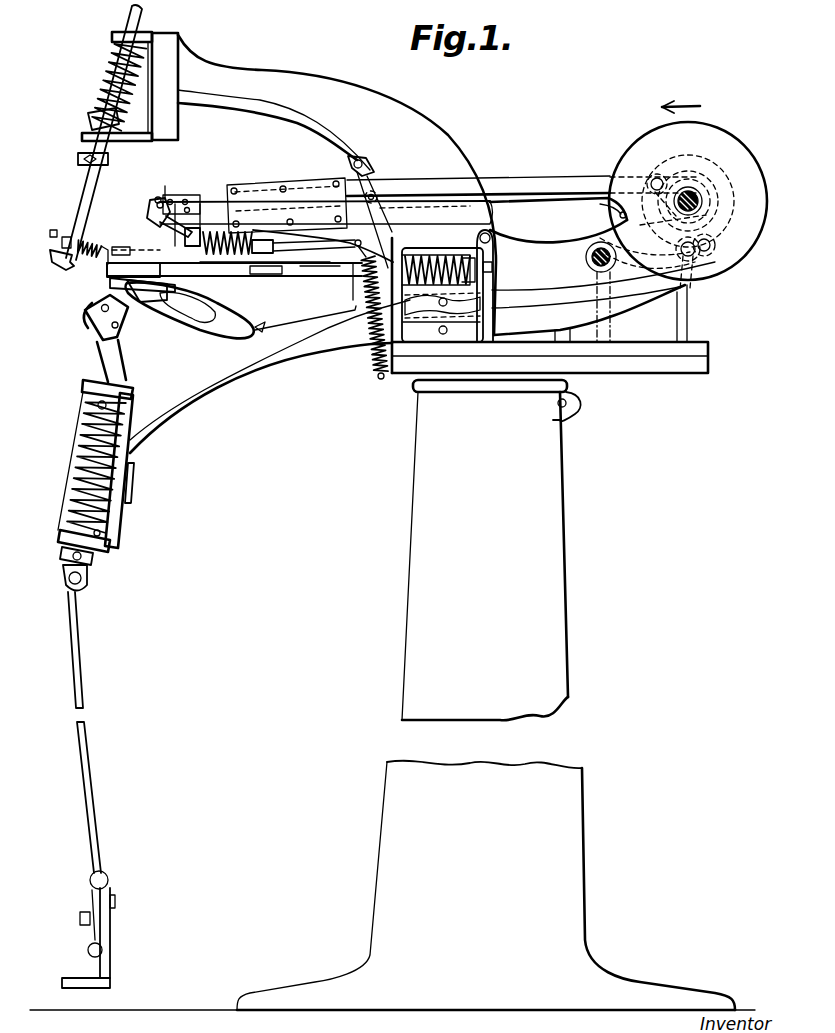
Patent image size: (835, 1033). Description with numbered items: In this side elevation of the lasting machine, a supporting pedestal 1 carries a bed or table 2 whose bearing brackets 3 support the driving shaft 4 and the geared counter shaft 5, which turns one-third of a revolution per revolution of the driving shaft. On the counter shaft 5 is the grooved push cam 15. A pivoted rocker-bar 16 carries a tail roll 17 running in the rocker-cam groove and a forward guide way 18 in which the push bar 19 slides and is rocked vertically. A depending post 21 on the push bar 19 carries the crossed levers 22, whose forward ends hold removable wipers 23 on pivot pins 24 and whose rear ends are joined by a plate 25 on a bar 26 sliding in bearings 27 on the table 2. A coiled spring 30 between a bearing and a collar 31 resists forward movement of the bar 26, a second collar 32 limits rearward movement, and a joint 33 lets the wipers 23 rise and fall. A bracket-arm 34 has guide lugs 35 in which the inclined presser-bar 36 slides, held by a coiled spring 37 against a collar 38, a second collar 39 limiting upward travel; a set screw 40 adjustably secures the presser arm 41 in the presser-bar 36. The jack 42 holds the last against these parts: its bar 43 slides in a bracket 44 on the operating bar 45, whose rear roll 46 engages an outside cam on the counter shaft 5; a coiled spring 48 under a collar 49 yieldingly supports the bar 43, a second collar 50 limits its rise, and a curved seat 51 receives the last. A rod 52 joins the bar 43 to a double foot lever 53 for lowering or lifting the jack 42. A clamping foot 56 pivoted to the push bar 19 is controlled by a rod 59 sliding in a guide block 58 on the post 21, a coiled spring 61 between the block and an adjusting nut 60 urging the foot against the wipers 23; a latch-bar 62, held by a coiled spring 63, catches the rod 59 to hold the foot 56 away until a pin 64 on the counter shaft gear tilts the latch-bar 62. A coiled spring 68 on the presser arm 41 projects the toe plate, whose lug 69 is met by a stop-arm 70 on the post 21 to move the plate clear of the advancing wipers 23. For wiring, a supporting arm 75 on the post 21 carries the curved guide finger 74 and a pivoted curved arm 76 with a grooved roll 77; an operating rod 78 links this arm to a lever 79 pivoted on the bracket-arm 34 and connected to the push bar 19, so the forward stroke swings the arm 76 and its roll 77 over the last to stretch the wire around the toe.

The supporting pedestal 1 is at (570, 768).
The bed or table 2 is at (603, 368).
The bearing brackets 3 is at (708, 350).
The driving shaft 4 is at (588, 252).
The driven or counter shaft 5 is at (692, 200).
The push cam 15 is at (726, 143).
The rocker-bar 16 is at (542, 292).
The roll 17 is at (700, 256).
The supporting guide way 18 is at (287, 205).
The push bar 19 is at (527, 179).
The depending post 21 is at (152, 371).
The crossed levers 22 is at (265, 282).
The wipers 23 is at (107, 270).
The pivot pins 24 is at (120, 283).
The plate 25 is at (266, 276).
The bar 26 is at (313, 276).
The bearings 27 is at (420, 350).
The coiled spring 30 is at (440, 262).
The collar 31 is at (466, 295).
The second collar 32 is at (375, 265).
The joint 33 is at (352, 315).
The bracket-arm 34 is at (446, 185).
The guide lugs 35 is at (112, 34).
The presser-bar 36 is at (78, 188).
The coiled spring 37 is at (104, 70).
The collar 38 is at (88, 118).
The second collar 39 is at (78, 160).
The set screw 40 is at (60, 242).
The presser arm 41 is at (50, 234).
The jack 42 is at (72, 495).
The bar 43 is at (100, 357).
The bracket 44 is at (118, 485).
The supporting and operating bar 45 is at (237, 387).
The roll 46 is at (712, 248).
The coiled spring 48 is at (80, 447).
The collar 49 is at (83, 400).
The second collar 50 is at (62, 553).
The curved seat 51 is at (80, 315).
The rod 52 is at (84, 708).
The double foot lever 53 is at (110, 938).
The clamping foot 56 is at (160, 196).
The guide block 58 is at (178, 200).
The rod 59 is at (158, 196).
The adjusting nut 60 is at (255, 240).
The coiled spring 61 is at (200, 228).
The latch-bar 62 is at (540, 222).
The coiled spring 63 is at (365, 350).
The pin 64 is at (621, 215).
The coiled spring 68 is at (80, 236).
The lug 69 is at (101, 248).
The stop-arm 70 is at (118, 248).
The curved guide finger 74 is at (190, 312).
The supporting arm 75 is at (165, 292).
The curved arm 76 is at (222, 330).
The grooved roll 77 is at (100, 318).
The operating rod 78 is at (300, 320).
The lever 79 is at (374, 170).